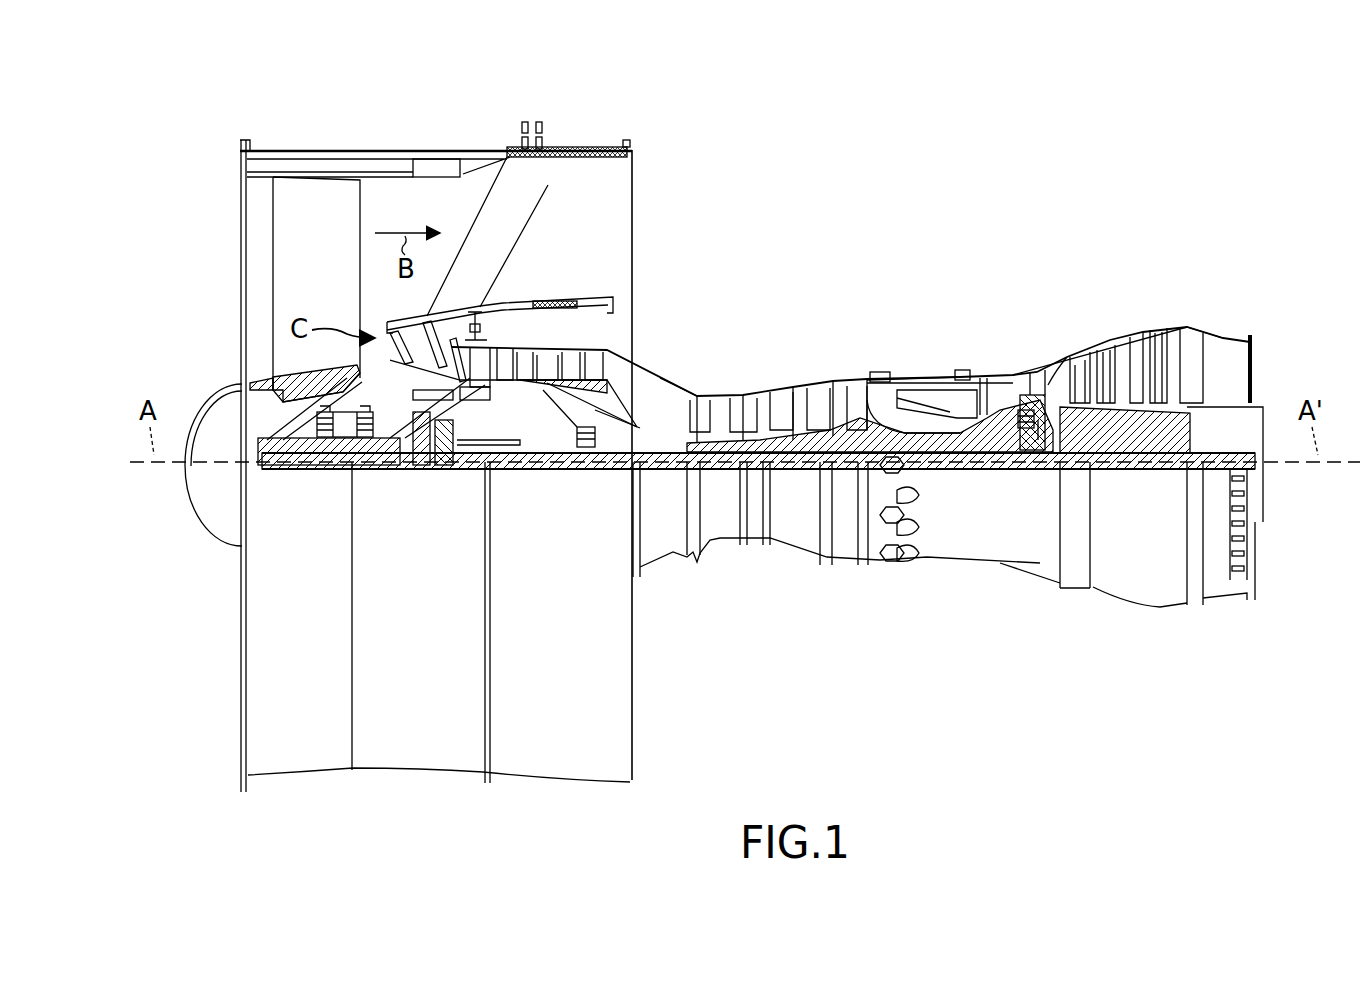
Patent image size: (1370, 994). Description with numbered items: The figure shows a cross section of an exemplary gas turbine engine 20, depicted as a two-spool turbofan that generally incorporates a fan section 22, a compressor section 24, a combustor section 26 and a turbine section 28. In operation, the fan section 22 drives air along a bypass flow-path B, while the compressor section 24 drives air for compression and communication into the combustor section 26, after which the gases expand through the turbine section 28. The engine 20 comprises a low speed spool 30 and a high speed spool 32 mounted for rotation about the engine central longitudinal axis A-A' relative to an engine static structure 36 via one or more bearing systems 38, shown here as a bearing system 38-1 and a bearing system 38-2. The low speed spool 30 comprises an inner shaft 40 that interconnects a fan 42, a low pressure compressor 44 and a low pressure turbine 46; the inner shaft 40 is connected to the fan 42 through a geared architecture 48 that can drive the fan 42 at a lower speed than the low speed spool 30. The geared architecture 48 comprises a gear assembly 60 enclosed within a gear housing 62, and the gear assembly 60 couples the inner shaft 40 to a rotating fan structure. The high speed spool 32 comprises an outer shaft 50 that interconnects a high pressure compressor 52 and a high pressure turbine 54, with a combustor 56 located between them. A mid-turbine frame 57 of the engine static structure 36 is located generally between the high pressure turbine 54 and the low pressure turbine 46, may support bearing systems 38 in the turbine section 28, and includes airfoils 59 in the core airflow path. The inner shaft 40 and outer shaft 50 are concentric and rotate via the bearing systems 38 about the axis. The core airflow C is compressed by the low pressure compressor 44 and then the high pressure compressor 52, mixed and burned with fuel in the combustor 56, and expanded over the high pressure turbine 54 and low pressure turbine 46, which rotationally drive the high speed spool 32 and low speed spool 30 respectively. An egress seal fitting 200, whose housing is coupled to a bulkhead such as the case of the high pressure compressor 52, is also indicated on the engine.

The gas turbine engine 20 is at (979, 181).
The fan section 22 is at (480, 130).
The compressor section 24 is at (490, 264).
The combustor section 26 is at (985, 264).
The turbine section 28 is at (1195, 264).
The low speed spool 30 is at (800, 505).
The high speed spool 32 is at (836, 432).
The engine static structure 36 is at (235, 778).
The bearing system 38 is at (1035, 465).
The bearing system 38-1 is at (330, 440).
The bearing system 38-2 is at (577, 455).
The inner shaft 40 is at (652, 465).
The fan 42 is at (306, 308).
The low pressure compressor section 44 is at (565, 358).
The low pressure turbine section 46 is at (1125, 352).
The geared architecture 48 is at (451, 486).
The outer shaft 50 is at (920, 440).
The high pressure compressor 52 is at (805, 392).
The high pressure turbine section 54 is at (967, 388).
The combustor 56 is at (930, 400).
The mid-turbine frame 57 is at (1037, 373).
The airfoils 59 is at (1047, 385).
The gear assembly 60 is at (452, 440).
The gear housing 62 is at (455, 400).
The egress seal fitting 200 is at (670, 367).